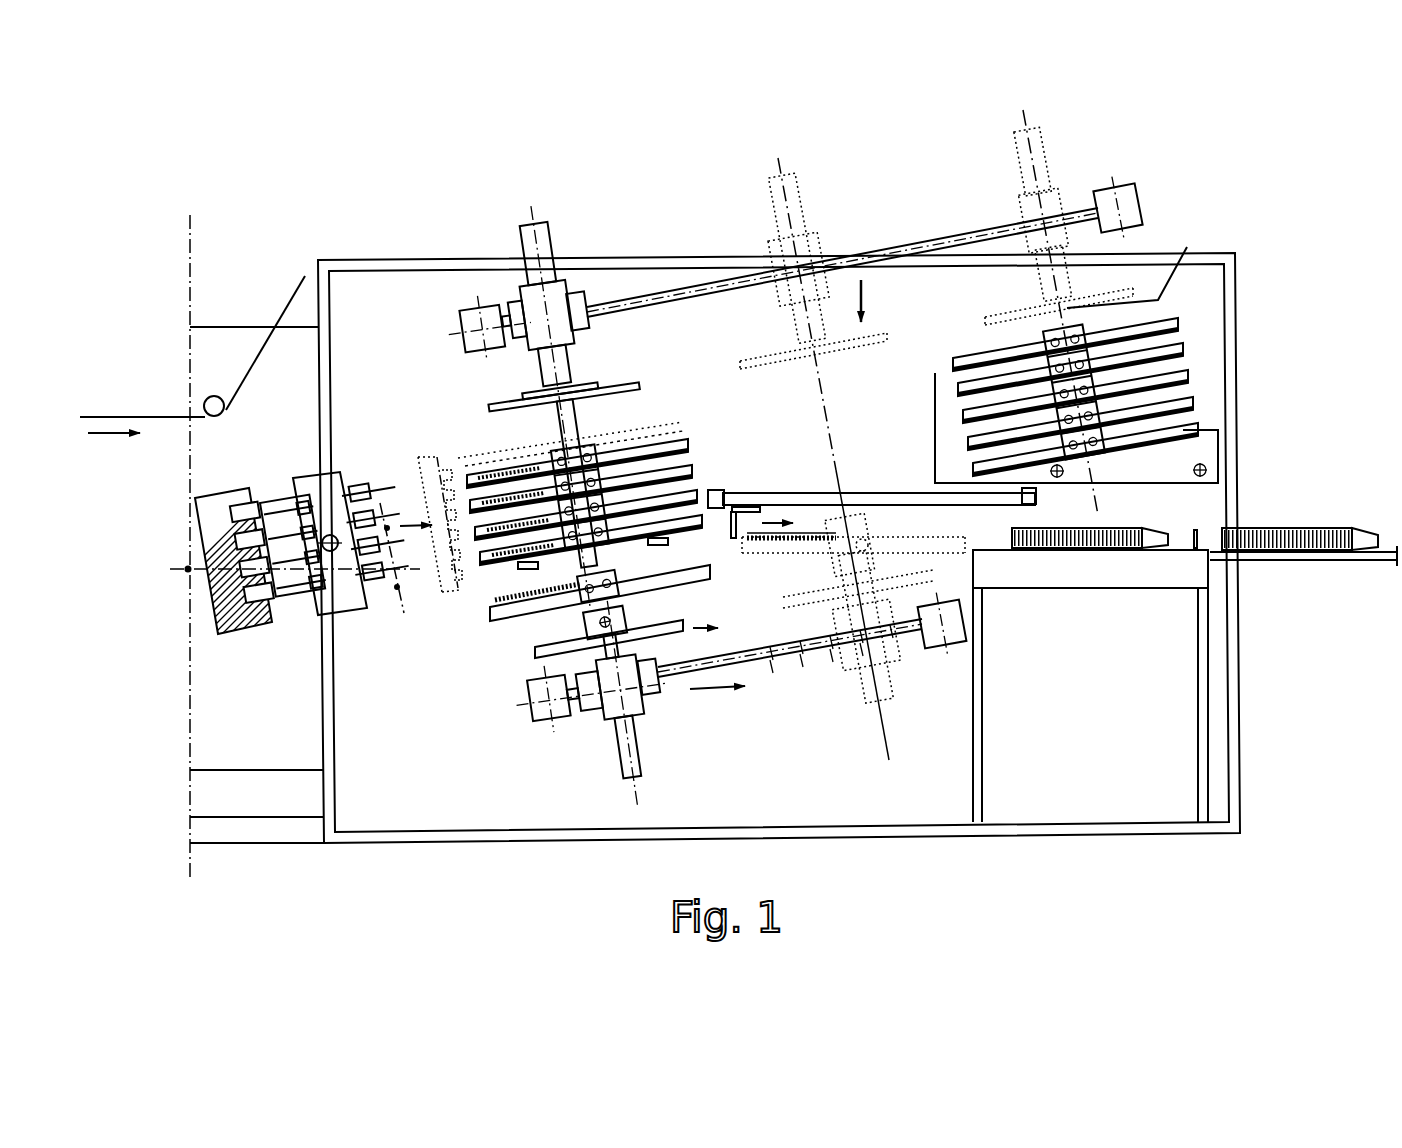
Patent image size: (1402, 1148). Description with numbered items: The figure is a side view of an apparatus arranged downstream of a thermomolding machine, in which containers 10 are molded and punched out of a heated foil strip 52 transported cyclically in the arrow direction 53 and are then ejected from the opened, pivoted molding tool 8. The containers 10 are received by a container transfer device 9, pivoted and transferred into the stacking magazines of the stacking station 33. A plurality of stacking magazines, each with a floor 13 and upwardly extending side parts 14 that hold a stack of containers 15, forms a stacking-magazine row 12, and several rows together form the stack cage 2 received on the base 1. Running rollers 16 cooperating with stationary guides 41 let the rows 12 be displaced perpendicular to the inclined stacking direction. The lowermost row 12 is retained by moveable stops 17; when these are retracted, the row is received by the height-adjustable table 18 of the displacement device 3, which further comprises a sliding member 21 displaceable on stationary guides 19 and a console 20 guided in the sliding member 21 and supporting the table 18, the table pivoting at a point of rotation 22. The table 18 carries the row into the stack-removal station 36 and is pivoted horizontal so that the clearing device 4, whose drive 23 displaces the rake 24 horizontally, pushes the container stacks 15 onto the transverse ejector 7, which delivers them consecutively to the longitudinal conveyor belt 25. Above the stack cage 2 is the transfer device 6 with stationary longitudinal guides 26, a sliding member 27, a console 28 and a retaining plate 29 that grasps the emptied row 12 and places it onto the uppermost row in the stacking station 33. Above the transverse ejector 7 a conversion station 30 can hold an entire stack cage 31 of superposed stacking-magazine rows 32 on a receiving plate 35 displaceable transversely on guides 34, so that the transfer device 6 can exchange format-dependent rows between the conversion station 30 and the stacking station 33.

The base 1 is at (1236, 665).
The stack cage 2 is at (698, 438).
The displacement device 3 is at (741, 606).
The clearing device 4 is at (824, 468).
The transfer device 6 is at (580, 272).
The transverse ejector 7 is at (1086, 603).
The molding tool 8 is at (247, 628).
The container transfer device 9 is at (336, 470).
The containers 10 is at (300, 594).
The stacking-magazine row 12 is at (486, 563).
The floor 13 is at (962, 563).
The side parts 14 is at (940, 548).
The container stacks 15 is at (810, 530).
The running rollers 16 is at (586, 460).
The moveable stops 17 is at (663, 540).
The table 18 is at (530, 617).
The stationary guides 19 is at (778, 664).
The console 20 is at (594, 642).
The sliding member 21 is at (648, 690).
The point of rotation 22 is at (625, 616).
The drive 23 is at (895, 494).
The rake 24 is at (736, 541).
The longitudinal conveyor belt 25 is at (1327, 556).
The longitudinal guides 26 is at (987, 230).
The sliding member 27 is at (582, 318).
The console 28 is at (538, 396).
The retaining plate 29 is at (637, 386).
The conversion station 30 is at (1026, 122).
The stack cage 31 is at (1208, 293).
The stacking-magazine rows 32 is at (1185, 428).
The stacking station 33 is at (533, 209).
The guides 34 is at (1180, 465).
The receiving plate 35 is at (1215, 447).
The stack-removal station 36 is at (859, 476).
The stationary guides 41 is at (565, 423).
The heated foil strip 52 is at (118, 415).
The arrow direction 53 is at (114, 454).